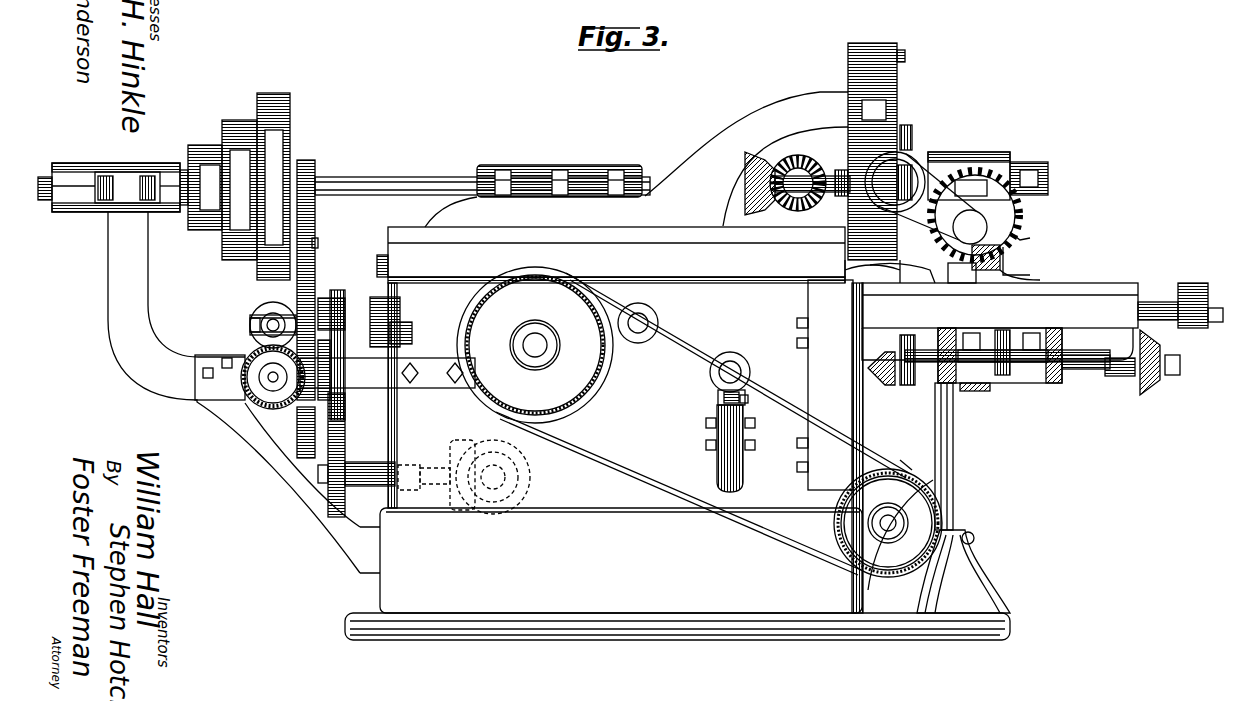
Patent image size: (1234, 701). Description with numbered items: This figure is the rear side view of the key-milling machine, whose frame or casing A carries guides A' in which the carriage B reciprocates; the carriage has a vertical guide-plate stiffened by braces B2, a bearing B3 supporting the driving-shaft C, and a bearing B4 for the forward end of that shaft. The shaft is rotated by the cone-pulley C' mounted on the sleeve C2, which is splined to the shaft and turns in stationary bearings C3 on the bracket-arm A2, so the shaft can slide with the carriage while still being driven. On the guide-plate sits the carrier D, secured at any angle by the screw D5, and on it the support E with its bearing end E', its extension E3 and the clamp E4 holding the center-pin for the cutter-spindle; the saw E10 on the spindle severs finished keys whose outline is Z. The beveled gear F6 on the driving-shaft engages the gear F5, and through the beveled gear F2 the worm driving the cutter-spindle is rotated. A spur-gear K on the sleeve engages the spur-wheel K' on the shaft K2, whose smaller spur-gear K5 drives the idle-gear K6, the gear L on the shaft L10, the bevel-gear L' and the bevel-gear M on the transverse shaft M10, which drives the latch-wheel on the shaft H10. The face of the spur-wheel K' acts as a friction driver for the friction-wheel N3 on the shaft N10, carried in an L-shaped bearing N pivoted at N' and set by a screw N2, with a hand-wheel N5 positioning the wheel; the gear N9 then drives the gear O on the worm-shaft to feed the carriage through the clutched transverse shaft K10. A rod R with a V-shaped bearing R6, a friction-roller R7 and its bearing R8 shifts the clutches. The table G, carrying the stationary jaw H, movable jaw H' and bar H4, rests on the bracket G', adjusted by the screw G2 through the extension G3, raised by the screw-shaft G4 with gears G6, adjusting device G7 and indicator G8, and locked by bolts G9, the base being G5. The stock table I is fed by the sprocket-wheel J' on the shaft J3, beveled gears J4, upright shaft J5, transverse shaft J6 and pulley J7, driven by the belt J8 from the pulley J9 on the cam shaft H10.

The stationary bearings C3 is at (109, 177).
The sleeve C2 is at (183, 170).
The cone-pulley C' is at (239, 186).
The spur-gear K is at (319, 271).
The spur-wheel K' is at (328, 233).
The smaller spur-gear K5 is at (318, 272).
The driving-shaft C is at (482, 172).
The bearing B3 is at (559, 167).
The guides A' is at (616, 240).
The strengthening ribs or braces B2 is at (746, 159).
The carrier D is at (872, 151).
The screw or bolt D5 is at (905, 57).
The beveled gear F5 is at (803, 156).
The beveled gear F6 is at (748, 168).
The beveled gear F2 is at (838, 222).
The bearing B4 is at (900, 165).
The support extension E3 is at (895, 182).
The support E is at (974, 162).
The ratchet wheel E'' is at (975, 215).
The support end E' is at (970, 227).
The clamp E4 is at (926, 197).
The saw E10 is at (1033, 229).
The key outlines Z is at (1003, 256).
The stationary jaw H is at (1038, 263).
The carriage B is at (879, 258).
The bar H4 is at (915, 283).
The movable jaw H' is at (962, 288).
The table G is at (1000, 321).
The screw G2 is at (1158, 300).
The extension of the bracket G3 is at (1200, 294).
The table or frame I is at (940, 348).
The sprocket-wheel J' is at (1003, 330).
The shaft J3 is at (1005, 376).
The adjusting device G7 is at (1095, 377).
The indicator G8 is at (1163, 365).
The gears G6 is at (978, 392).
The beveled gears J4 is at (868, 362).
The cap-screw or bolts G9 is at (826, 448).
The vertical screw-shaft G4 is at (955, 456).
The foot G5 is at (975, 580).
The bracket G' is at (900, 508).
The upright shaft J5 is at (910, 462).
The frame or casing A is at (677, 460).
The bracket-arm A2 is at (234, 392).
The friction-wheel N3 is at (266, 317).
The L-shaped bearing N is at (273, 309).
The shaft N10 is at (252, 325).
The hand-wheel N5 is at (272, 410).
The screw N2 is at (338, 297).
The shaft K2 is at (403, 320).
The gear N9 is at (413, 335).
The pivot N' is at (387, 373).
The gear O is at (378, 260).
The idle-gear K6 is at (340, 440).
The gear L is at (356, 455).
The bevel-gear L' is at (466, 464).
The shaft L10 is at (424, 460).
The bevel-gear M is at (528, 463).
The transverse shaft M10 is at (505, 478).
The shaft H10 is at (530, 340).
The transverse shaft K10 is at (657, 318).
The rod R is at (738, 361).
The friction-roller R7 is at (718, 396).
The V-shaped bearing R6 is at (748, 400).
The bearing R8 is at (745, 462).
The belt wheel or pulley J7 is at (888, 523).
The transverse shaft J6 is at (893, 530).
The pulley J9 is at (598, 390).
The belt J8 is at (678, 493).